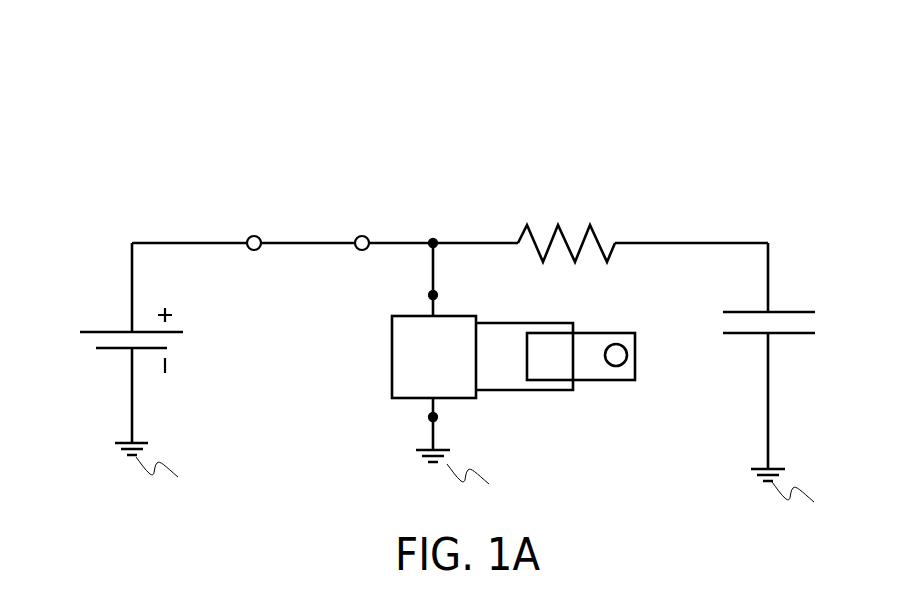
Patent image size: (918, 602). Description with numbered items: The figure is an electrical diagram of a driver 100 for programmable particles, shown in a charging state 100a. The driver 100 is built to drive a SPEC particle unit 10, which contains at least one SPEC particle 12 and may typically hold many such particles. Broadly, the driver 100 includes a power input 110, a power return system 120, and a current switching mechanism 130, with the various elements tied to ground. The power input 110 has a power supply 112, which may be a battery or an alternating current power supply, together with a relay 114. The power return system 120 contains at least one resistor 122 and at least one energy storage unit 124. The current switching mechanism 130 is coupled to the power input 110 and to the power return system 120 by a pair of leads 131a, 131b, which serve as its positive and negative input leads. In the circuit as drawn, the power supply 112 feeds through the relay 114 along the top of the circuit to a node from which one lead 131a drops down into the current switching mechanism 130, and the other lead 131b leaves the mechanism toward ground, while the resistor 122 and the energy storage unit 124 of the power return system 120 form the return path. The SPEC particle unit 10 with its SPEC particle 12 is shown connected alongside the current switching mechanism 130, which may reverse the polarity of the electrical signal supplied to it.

The driver 100 is at (209, 90).
The charging state 100a is at (432, 135).
The power input 110 is at (162, 192).
The power supply 112 is at (112, 313).
The relay 114 is at (292, 242).
The power return system 120 is at (750, 192).
The resistor 122 is at (537, 237).
The energy storage unit 124 is at (750, 352).
The current switching mechanism 130 is at (434, 357).
The positive input lead 131a is at (429, 295).
The negative input lead 131b is at (430, 417).
The SPEC particle unit 10 is at (581, 356).
The SPEC particle 12 is at (613, 366).